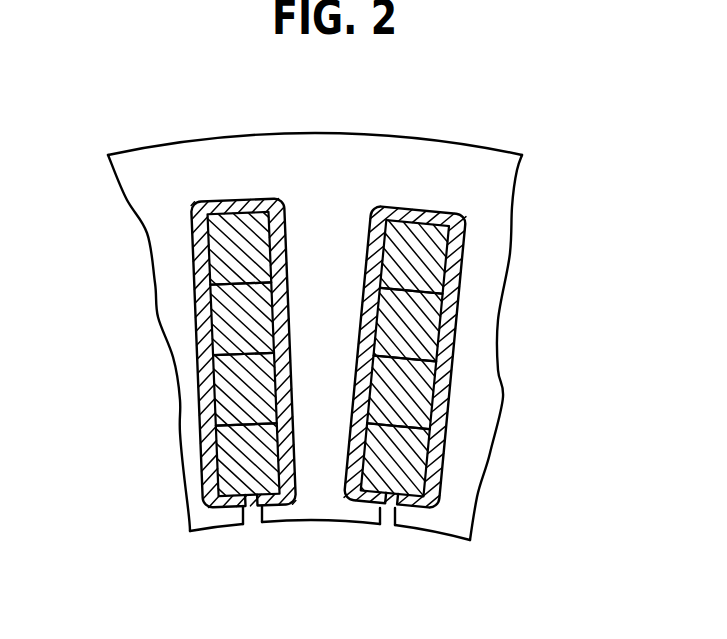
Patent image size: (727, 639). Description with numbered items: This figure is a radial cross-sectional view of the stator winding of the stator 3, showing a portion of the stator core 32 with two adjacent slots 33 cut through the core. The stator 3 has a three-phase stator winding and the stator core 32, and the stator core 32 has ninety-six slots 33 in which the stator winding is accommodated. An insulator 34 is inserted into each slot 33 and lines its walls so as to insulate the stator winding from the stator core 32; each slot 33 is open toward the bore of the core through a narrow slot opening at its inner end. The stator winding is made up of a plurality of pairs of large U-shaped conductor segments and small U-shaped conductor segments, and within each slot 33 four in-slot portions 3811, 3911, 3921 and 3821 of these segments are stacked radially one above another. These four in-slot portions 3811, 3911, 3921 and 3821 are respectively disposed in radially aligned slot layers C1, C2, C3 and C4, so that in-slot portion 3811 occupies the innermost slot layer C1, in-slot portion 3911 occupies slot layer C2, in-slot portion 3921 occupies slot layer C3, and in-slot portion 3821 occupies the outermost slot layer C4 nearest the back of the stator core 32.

The stator 3 is at (415, 119).
The stator core 32 is at (326, 152).
The slot 33 is at (252, 508).
The insulator 34 is at (215, 207).
The slot layer C1 is at (213, 448).
The slot layer C2 is at (213, 388).
The slot layer C3 is at (215, 315).
The slot layer C4 is at (212, 248).
The in-slot portion 3811 is at (407, 458).
The in-slot portion 3911 is at (418, 390).
The in-slot portion 3921 is at (423, 325).
The in-slot portion 3821 is at (423, 255).